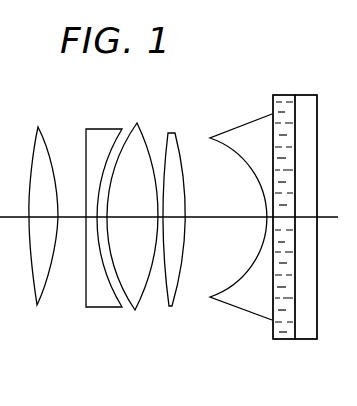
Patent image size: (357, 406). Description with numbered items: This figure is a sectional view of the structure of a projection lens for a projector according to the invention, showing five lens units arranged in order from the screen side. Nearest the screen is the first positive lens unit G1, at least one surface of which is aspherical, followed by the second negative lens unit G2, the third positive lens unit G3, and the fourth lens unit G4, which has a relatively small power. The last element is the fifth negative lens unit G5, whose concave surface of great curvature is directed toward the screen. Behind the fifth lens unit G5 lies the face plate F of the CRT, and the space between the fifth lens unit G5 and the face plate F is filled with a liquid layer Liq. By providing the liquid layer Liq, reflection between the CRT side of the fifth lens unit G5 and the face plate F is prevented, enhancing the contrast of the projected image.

The first positive lens unit G1 is at (39, 309).
The second negative lens unit G2 is at (102, 308).
The third positive lens unit G3 is at (137, 312).
The fourth lens unit G4 is at (172, 306).
The fifth negative lens unit G5 is at (324, 345).
The liquid layer Liq is at (281, 93).
The face plate F is at (307, 103).